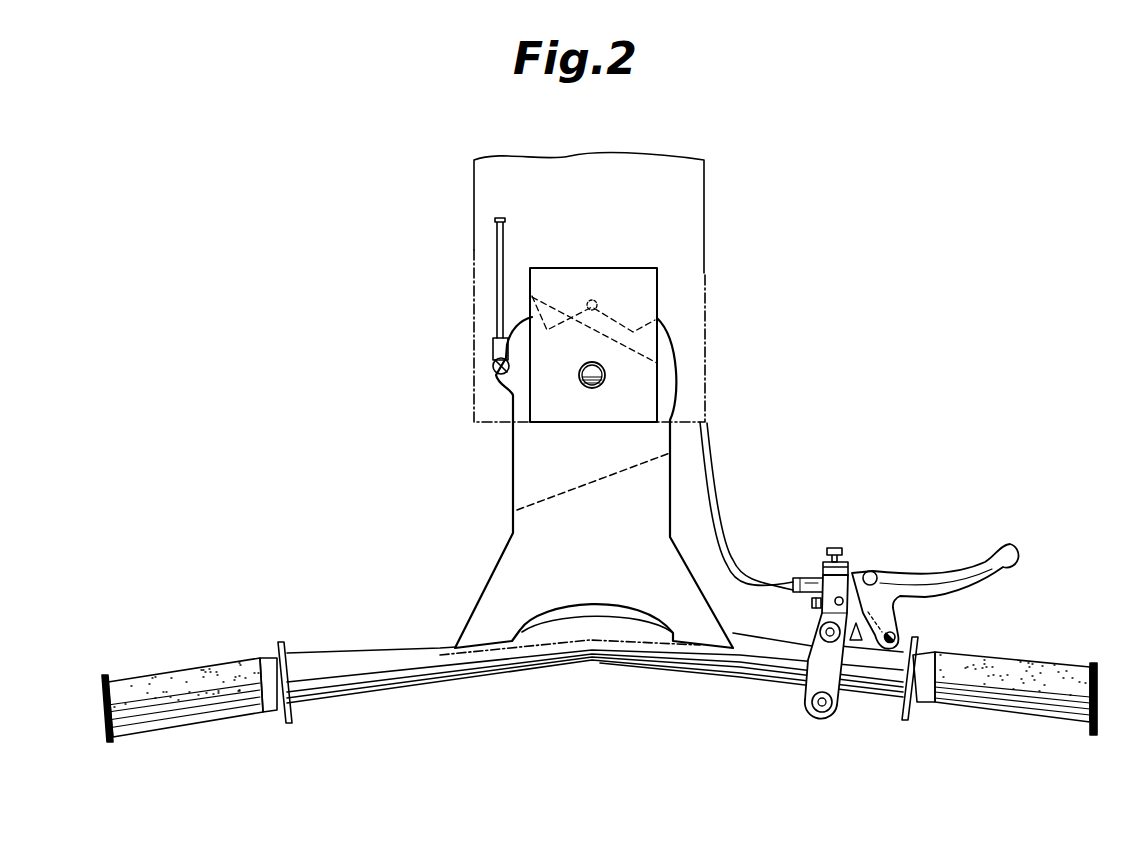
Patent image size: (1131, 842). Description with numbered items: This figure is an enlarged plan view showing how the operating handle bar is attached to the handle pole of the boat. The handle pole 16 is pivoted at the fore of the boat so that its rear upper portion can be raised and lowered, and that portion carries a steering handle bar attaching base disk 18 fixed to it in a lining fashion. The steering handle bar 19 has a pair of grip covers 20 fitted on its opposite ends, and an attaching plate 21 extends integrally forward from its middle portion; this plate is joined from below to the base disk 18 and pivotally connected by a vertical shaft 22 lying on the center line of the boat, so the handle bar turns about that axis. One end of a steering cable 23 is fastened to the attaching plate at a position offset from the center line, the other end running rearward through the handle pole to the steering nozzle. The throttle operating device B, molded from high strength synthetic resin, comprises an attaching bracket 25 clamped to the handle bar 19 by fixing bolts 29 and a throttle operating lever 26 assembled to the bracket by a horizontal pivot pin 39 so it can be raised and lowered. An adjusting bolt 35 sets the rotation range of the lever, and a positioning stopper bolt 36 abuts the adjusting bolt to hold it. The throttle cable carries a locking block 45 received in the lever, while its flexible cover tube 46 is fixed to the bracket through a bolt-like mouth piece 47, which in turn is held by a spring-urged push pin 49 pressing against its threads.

The handle pole 16 is at (697, 187).
The steering handle bar attaching base disk 18 is at (633, 270).
The steering handle bar 19 is at (558, 648).
The grip covers 20 is at (210, 670).
The attaching plate 21 is at (522, 530).
The vertical shaft 22 is at (602, 375).
The steering cable 23 is at (500, 250).
The attaching bracket 25 is at (817, 682).
The throttle operating lever 26 is at (997, 575).
The fixing bolts 29 is at (823, 708).
The adjusting bolt 35 is at (810, 603).
The positioning stopper bolt 36 is at (841, 597).
The horizontal pivot pin 39 is at (898, 636).
The locking block 45 is at (877, 576).
The flexible cover tube 46 is at (718, 483).
The mouth piece 47 is at (800, 580).
The push pin 49 is at (832, 548).
The throttle operating device B is at (850, 558).